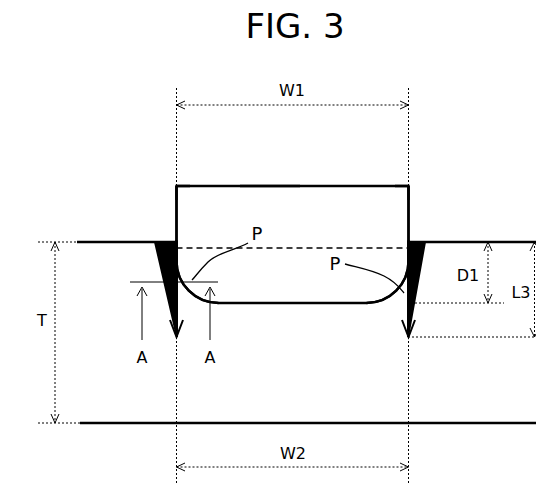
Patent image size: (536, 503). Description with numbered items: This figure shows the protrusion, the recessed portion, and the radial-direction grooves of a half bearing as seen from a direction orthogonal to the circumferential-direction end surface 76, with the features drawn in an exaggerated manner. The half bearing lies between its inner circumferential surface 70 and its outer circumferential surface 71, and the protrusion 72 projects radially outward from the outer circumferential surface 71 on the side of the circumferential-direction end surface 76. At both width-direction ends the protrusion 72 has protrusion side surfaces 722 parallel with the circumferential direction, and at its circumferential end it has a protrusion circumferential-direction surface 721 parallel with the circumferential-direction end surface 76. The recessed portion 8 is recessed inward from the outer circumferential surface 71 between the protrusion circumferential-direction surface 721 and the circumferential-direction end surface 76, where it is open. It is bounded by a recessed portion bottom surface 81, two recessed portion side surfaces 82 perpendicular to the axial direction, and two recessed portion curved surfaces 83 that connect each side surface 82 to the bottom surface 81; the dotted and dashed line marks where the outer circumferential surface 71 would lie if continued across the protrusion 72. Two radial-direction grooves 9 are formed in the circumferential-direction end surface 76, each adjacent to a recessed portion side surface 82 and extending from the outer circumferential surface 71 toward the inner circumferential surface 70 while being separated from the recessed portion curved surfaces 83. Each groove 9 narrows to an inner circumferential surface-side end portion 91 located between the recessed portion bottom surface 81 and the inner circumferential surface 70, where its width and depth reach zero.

The inner circumferential surface 70 is at (118, 423).
The outer circumferential surface 71 is at (82, 240).
The circumferential-direction end surface 76 is at (445, 403).
The protrusion 72 is at (233, 185).
The protrusion circumferential-direction surface 721 is at (266, 186).
The protrusion side surface 722 is at (175, 220).
The recessed portion 8 is at (311, 273).
The recessed portion bottom surface 81 is at (281, 248).
The recessed portion side surface 82 is at (184, 268).
The recessed portion curved surface 83 is at (196, 278).
The radial-direction groove 9 is at (157, 237).
The inner circumferential surface-side end portion 91 is at (173, 343).